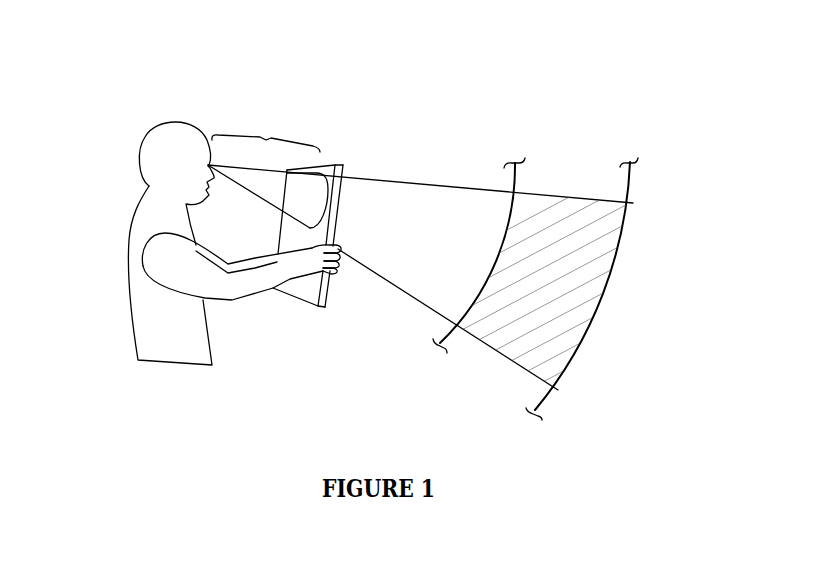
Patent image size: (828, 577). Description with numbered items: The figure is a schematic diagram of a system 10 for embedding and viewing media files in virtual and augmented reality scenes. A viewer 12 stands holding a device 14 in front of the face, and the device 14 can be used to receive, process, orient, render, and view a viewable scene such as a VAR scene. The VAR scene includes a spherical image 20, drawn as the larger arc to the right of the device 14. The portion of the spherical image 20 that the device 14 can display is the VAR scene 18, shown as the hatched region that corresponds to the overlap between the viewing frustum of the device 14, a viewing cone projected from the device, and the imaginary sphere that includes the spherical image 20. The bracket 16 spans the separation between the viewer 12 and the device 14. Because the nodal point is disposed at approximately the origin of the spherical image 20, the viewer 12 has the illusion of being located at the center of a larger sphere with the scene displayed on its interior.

The system 10 is at (617, 99).
The viewer 12 is at (140, 152).
The device 14 is at (343, 195).
The viewing distance 16 is at (266, 128).
The VAR scene 18 is at (590, 287).
The spherical image 20 is at (590, 187).